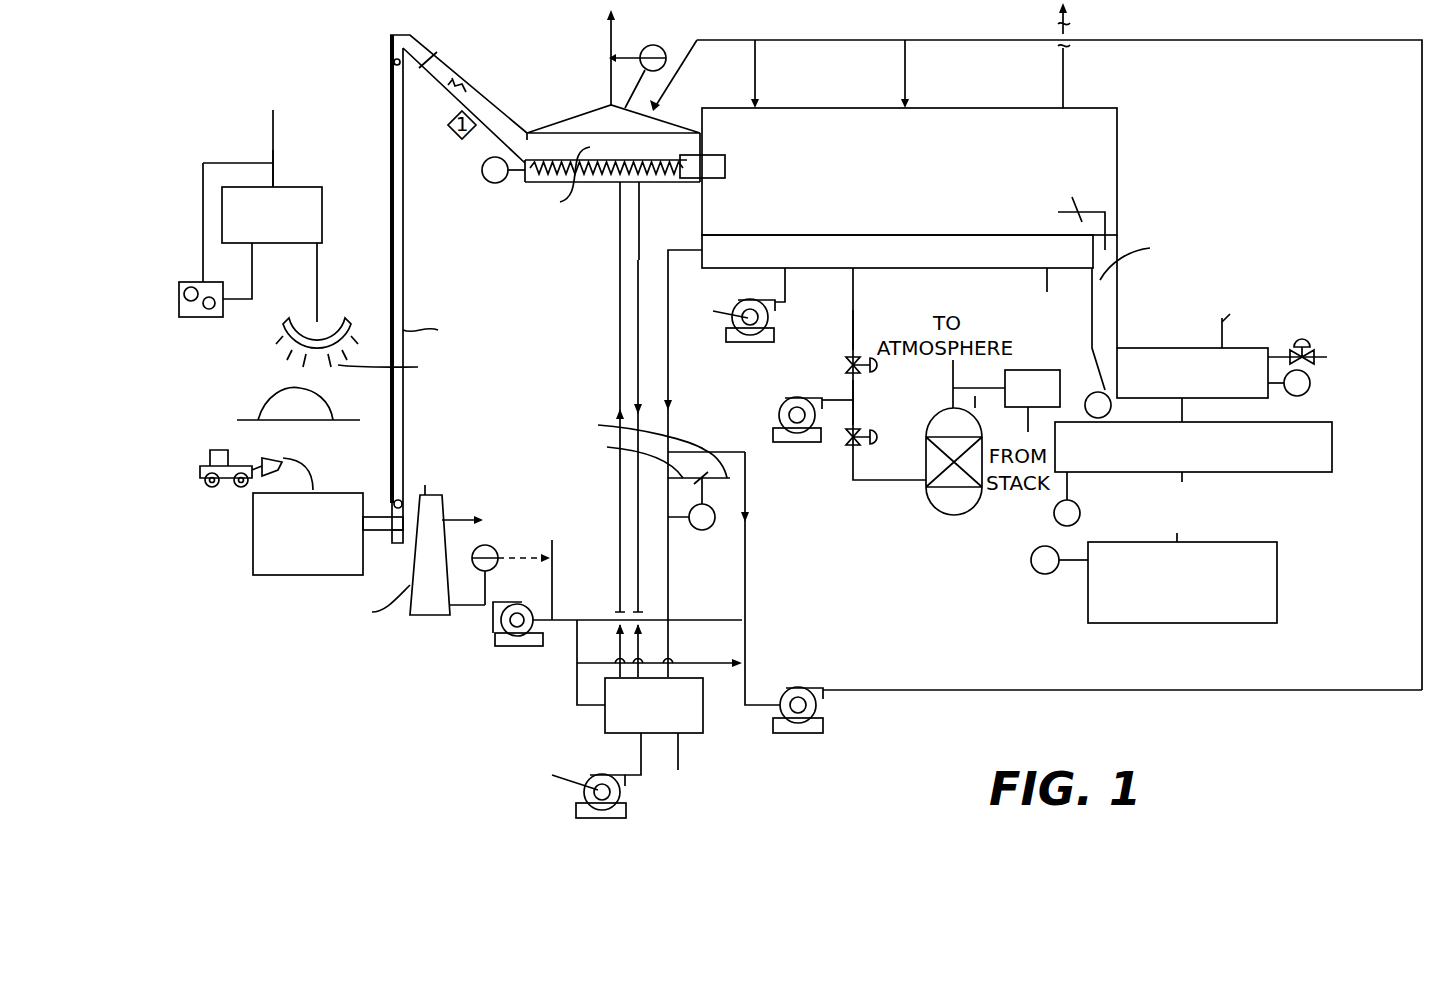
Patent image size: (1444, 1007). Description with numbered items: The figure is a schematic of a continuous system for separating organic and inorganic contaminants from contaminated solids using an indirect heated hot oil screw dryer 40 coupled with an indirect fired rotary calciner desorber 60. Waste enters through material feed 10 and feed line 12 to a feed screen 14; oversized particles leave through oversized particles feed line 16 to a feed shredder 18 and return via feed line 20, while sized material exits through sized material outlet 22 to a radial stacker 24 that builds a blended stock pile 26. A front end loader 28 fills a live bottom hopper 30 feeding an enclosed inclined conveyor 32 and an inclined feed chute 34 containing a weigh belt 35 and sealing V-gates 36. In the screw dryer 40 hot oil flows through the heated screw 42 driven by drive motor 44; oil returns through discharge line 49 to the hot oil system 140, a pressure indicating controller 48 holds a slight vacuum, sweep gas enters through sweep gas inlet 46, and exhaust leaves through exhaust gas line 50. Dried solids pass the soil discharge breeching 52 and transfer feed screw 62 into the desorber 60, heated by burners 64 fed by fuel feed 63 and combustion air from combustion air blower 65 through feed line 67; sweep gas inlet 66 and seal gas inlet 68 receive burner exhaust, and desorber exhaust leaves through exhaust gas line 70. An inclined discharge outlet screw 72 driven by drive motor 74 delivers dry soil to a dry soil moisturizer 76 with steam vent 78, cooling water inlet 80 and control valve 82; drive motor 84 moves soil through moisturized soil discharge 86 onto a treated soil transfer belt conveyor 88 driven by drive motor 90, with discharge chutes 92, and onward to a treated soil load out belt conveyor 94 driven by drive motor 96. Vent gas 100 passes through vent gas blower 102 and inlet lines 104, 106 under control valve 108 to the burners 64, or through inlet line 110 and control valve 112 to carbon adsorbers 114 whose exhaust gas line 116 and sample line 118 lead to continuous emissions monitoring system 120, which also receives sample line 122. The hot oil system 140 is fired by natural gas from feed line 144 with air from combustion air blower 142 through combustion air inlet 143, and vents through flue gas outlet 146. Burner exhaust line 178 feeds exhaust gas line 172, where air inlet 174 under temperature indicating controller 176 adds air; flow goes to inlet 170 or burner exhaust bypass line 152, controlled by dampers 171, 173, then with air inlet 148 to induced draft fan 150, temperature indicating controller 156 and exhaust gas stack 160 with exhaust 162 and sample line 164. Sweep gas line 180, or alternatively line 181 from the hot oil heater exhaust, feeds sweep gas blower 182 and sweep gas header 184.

The material feed 10 is at (275, 138).
The feed line 12 is at (275, 175).
The feed screen 14 is at (323, 227).
The oversized particles feed line 16 is at (255, 280).
The feed shredder 18 is at (208, 272).
The feed line 20 is at (232, 163).
The sized material outlet 22 is at (320, 283).
The radial stacker 24 is at (325, 317).
The stock pile 26 is at (330, 398).
The front end loader 28 is at (228, 492).
The live bottom hopper 30 is at (323, 490).
The conveyor 32 is at (403, 425).
The inclined feed chute 34 is at (448, 85).
The weigh belt 35 is at (437, 53).
The V-gates 36 is at (466, 90).
The screw dryer 40 is at (558, 118).
The heated screw 42 is at (612, 183).
The drive motor 44 is at (482, 171).
The sweep gas inlet 46 is at (679, 75).
The pressure indicating controller 48 is at (682, 40).
The discharge line 49 is at (641, 253).
The exhaust gas line 50 is at (615, 28).
The soil discharge breeching 52 is at (692, 187).
The indirect fired rotary calciner desorber 60 is at (1118, 170).
The transfer feed screw 62 is at (726, 170).
The fuel feed 63 is at (1045, 272).
The burners 64 is at (962, 275).
The combustion air blower 65 is at (750, 300).
The sweep gas inlet 66 is at (758, 80).
The feed line 67 is at (790, 290).
The seal gas inlet 68 is at (907, 80).
The exhaust gas line 70 is at (1068, 22).
The inclined discharge outlet screw 72 is at (1118, 293).
The drive motor 74 is at (1085, 405).
The dry soil moisturizer 76 is at (1130, 348).
The steam vent 78 is at (1222, 318).
The cooling water inlet 80 is at (1318, 350).
The control valve 82 is at (1300, 337).
The drive motor 84 is at (1284, 372).
The moisturized soil discharge 86 is at (1185, 412).
The treated soil transfer belt conveyor 88 is at (1333, 452).
The drive motor 90 is at (1053, 515).
The discharge chutes 92 is at (1185, 478).
The treated soil load out belt conveyor 94 is at (1277, 583).
The drive motor 96 is at (1050, 546).
The vent gas 100 is at (780, 418).
The vent gas blower 102 is at (822, 398).
The inlet line 104 is at (856, 305).
The inlet line 106 is at (860, 325).
The control valve 108 is at (880, 368).
The inlet line 110 is at (858, 413).
The control valve 112 is at (858, 448).
The carbon adsorbers 114 is at (933, 510).
The exhaust gas line 116 is at (979, 383).
The sample line 118 is at (996, 389).
The continuous emissions monitoring system 120 is at (1035, 368).
The sample line 122 is at (1028, 432).
The hot oil system 140 is at (605, 725).
The combustion air blower 142 is at (610, 820).
The combustion air inlet 143 is at (641, 750).
The feed line 144 is at (680, 763).
The flue gas outlet 146 is at (577, 700).
The air inlet 148 is at (555, 573).
The induced draft fan 150 is at (493, 640).
The burner exhaust bypass line 152 is at (565, 615).
The temperature indicating controller 156 is at (495, 546).
The exhaust gas stack 160 is at (379, 571).
The exhaust 162 is at (430, 493).
The sample line 164 is at (458, 520).
The inlet 170 is at (672, 618).
The damper 171 is at (670, 640).
The exhaust gas line 172 is at (672, 572).
The damper 173 is at (655, 617).
The air inlet 174 is at (644, 443).
The temperature indicating controller 176 is at (690, 537).
The burner exhaust line 178 is at (663, 392).
The sweep gas line 180 is at (750, 512).
The line 181 is at (604, 663).
The sweep gas blower 182 is at (805, 680).
The sweep gas header 184 is at (975, 690).